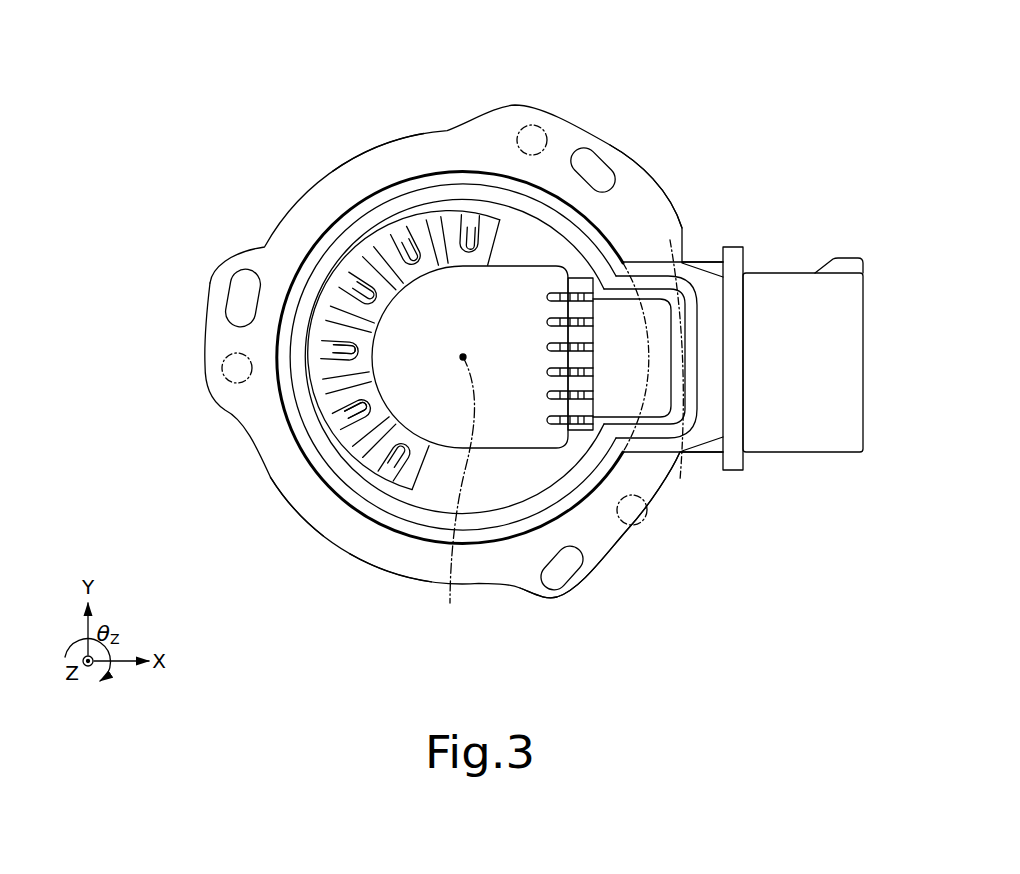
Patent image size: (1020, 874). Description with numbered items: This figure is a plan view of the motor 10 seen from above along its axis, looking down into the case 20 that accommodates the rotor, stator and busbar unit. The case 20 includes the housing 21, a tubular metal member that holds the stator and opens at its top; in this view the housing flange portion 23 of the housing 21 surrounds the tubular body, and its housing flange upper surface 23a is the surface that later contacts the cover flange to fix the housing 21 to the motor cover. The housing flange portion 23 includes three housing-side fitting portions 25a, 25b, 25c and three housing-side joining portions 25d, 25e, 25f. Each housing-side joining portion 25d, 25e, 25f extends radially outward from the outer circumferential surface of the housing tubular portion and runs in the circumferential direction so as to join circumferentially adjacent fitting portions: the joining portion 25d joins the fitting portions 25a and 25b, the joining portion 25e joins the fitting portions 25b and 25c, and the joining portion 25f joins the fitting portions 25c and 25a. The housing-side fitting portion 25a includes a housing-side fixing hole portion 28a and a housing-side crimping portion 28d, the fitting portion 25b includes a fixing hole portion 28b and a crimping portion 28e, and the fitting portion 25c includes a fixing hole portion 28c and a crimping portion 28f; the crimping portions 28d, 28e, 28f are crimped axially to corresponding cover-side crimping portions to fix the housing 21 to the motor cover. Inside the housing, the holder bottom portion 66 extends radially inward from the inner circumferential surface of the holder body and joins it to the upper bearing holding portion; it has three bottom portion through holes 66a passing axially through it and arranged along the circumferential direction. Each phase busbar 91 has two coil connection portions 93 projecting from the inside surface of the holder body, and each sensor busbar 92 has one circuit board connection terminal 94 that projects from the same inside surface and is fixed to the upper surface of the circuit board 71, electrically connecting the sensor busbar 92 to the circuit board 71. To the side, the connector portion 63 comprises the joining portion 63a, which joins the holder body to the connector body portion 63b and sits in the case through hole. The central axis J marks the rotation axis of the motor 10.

The motor 10 is at (808, 132).
The case 20 is at (464, 331).
The housing 21 is at (464, 331).
The housing flange portion 23 is at (337, 185).
The housing flange upper surface 23a is at (347, 530).
The housing-side fitting portion 25a is at (634, 553).
The housing-side fitting portion 25b is at (189, 332).
The housing-side fitting portion 25c is at (659, 161).
The housing-side joining portion 25d is at (302, 493).
The housing-side joining portion 25e is at (457, 110).
The housing-side joining portion 25f is at (663, 355).
The housing-side fixing hole portion 28a is at (562, 575).
The housing-side fixing hole portion 28b is at (232, 293).
The housing-side fixing hole portion 28c is at (598, 166).
The housing-side crimping portion 28d is at (633, 510).
The housing-side crimping portion 28e is at (235, 368).
The housing-side crimping portion 28f is at (532, 140).
The connector portion 63 is at (814, 422).
The joining portion 63a is at (725, 470).
The connector body portion 63b is at (845, 414).
The holder bottom portion 66 is at (412, 360).
The bottom portion through holes 66a is at (413, 232).
The circuit board 71 is at (600, 390).
The phase busbar 91 is at (271, 432).
The coil connection portions 93 is at (348, 443).
The sensor busbar 92 is at (580, 400).
The circuit board connection terminal 94 is at (605, 462).
The central axis J is at (457, 494).